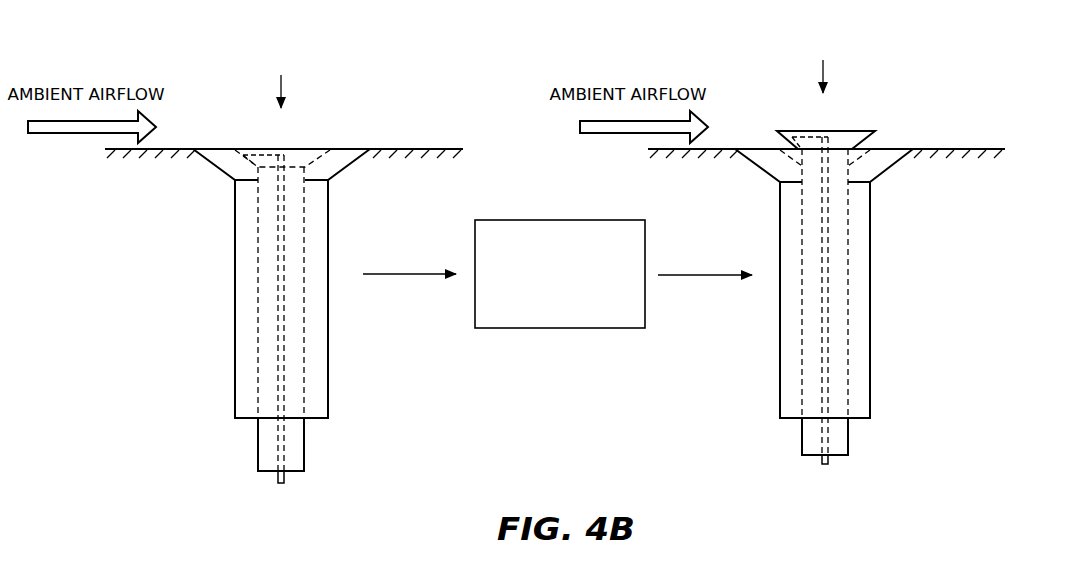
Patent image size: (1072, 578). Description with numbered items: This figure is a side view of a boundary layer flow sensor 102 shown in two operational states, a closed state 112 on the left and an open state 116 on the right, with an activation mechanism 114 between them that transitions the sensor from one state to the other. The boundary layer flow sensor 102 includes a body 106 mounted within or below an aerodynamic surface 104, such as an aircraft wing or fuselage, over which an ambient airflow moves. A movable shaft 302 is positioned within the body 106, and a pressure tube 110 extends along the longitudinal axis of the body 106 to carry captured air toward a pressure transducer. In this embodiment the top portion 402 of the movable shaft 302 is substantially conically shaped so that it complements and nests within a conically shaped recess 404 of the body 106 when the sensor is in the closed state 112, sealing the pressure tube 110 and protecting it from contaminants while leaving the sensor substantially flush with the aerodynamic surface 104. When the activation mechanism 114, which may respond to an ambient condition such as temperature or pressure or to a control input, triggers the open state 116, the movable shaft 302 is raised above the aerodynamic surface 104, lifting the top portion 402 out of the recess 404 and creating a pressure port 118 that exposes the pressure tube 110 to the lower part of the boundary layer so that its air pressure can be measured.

The boundary layer flow sensor 102 is at (104, 27).
The aerodynamic surface 104 is at (398, 148).
The body 106 is at (240, 233).
The pressure tube 110 is at (278, 280).
The closed state 112 is at (281, 79).
The activation mechanism 114 is at (560, 274).
The open state 116 is at (823, 64).
The pressure port 118 is at (776, 139).
The movable shaft 302 is at (303, 247).
The top portion 402 is at (306, 149).
The conically shaped recess 404 is at (314, 158).